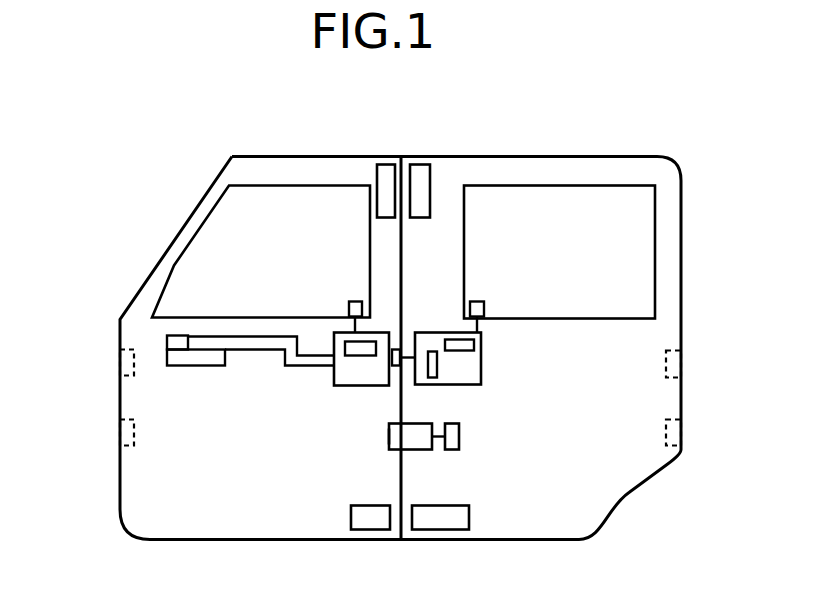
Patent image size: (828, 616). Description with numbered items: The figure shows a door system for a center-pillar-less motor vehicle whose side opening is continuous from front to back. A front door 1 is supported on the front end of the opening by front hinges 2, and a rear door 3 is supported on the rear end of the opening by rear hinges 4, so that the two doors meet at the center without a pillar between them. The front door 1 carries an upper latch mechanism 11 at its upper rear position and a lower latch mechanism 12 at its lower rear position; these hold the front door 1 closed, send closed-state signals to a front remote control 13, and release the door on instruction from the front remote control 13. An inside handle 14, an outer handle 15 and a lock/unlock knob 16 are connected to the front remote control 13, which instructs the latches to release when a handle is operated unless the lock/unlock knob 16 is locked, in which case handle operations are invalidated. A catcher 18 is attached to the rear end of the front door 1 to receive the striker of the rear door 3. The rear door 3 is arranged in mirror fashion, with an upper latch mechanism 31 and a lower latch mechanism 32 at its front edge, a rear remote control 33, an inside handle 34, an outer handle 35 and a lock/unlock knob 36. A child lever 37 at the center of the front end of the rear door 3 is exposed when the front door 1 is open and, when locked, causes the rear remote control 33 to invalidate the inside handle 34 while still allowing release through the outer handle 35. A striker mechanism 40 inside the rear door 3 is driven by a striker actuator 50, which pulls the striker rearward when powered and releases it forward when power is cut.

The front door 1 is at (247, 530).
The front hinges 2 is at (118, 360).
The rear door 3 is at (558, 532).
The rear hinges 4 is at (679, 362).
The upper latch mechanism 11 is at (383, 165).
The lower latch mechanism 12 is at (375, 520).
The front remote control 13 is at (333, 358).
The inside handle 14 is at (193, 353).
The outer handle 15 is at (338, 348).
The lock/unlock knob 16 is at (354, 299).
The catcher 18 is at (387, 440).
The upper latch mechanism 31 is at (418, 165).
The lower latch mechanism 32 is at (455, 520).
The rear remote control 33 is at (480, 383).
The inside handle 34 is at (431, 376).
The outer handle 35 is at (468, 343).
The lock/unlock knob 36 is at (476, 299).
The child lever 37 is at (397, 347).
The striker mechanism 40 is at (413, 440).
The striker actuator 50 is at (452, 443).